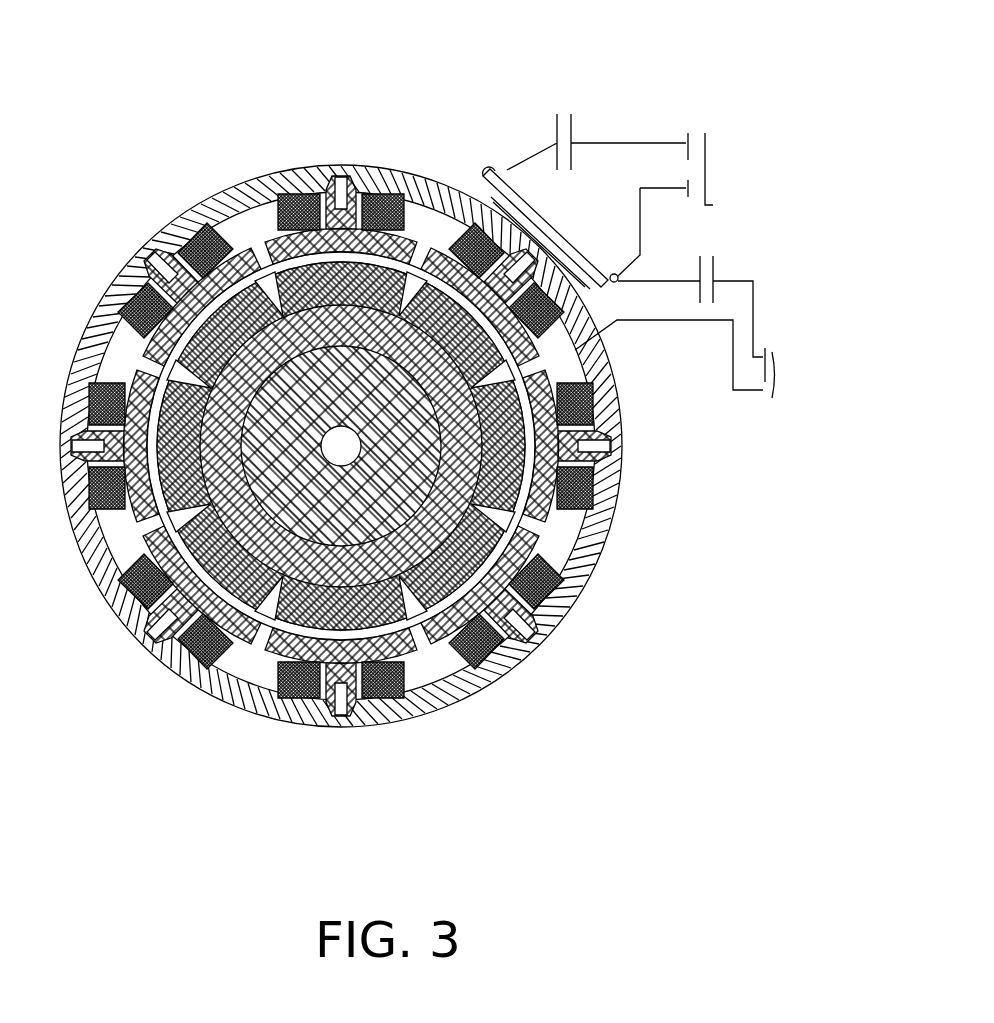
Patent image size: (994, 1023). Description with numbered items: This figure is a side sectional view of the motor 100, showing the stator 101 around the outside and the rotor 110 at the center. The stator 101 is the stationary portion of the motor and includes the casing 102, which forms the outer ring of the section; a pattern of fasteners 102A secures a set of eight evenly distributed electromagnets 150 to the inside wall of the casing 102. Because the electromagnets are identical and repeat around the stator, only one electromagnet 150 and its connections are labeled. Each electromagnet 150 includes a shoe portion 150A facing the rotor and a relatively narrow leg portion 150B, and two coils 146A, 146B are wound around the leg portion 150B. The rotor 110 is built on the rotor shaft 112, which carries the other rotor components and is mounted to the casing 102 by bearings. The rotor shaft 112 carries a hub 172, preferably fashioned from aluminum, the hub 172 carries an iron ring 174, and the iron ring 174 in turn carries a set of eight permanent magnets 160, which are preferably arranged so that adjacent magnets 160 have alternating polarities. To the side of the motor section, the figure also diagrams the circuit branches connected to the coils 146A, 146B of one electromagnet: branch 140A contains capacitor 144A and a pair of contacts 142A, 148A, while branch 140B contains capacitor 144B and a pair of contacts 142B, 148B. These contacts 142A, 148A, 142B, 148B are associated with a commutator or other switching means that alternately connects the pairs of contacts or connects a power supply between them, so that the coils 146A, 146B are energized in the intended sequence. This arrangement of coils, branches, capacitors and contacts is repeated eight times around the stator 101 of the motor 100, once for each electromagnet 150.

The motor 100 is at (425, 69).
The stator 101 is at (108, 634).
The casing 102 is at (580, 603).
The fasteners 102A is at (545, 640).
The rotor 110 is at (276, 300).
The rotor shaft 112 is at (352, 445).
The branch 140A is at (780, 347).
The branch 140B is at (712, 210).
The contact 142A is at (768, 400).
The contact 142B is at (690, 135).
The capacitor 144A is at (717, 263).
The capacitor 144B is at (590, 118).
The coil 146A is at (341, 515).
The coil 146B is at (410, 697).
The contact 148A is at (770, 398).
The contact 148B is at (705, 140).
The electromagnet 150 is at (420, 656).
The shoe portion 150A is at (278, 635).
The leg portion 150B is at (310, 690).
The permanent magnets 160 is at (480, 558).
The hub 172 is at (393, 482).
The iron ring 174 is at (458, 496).